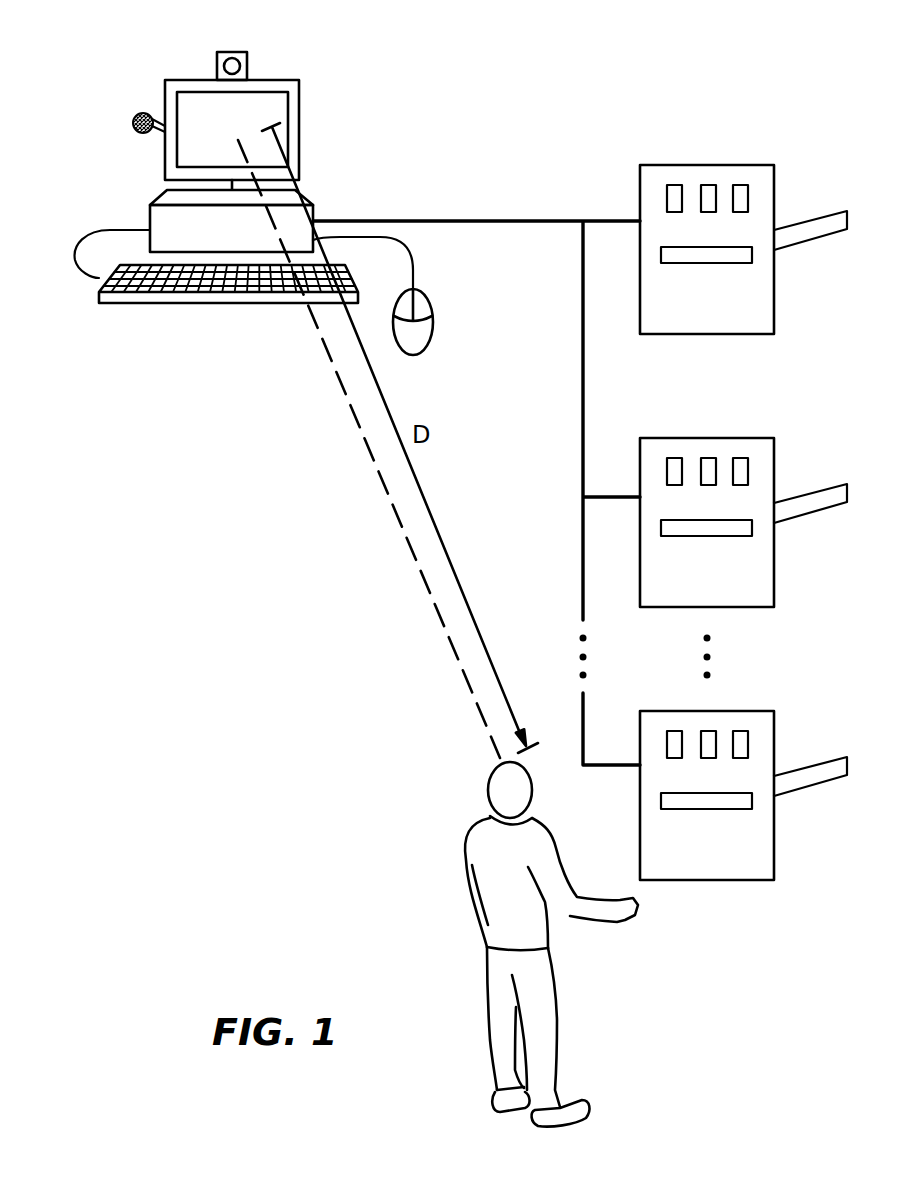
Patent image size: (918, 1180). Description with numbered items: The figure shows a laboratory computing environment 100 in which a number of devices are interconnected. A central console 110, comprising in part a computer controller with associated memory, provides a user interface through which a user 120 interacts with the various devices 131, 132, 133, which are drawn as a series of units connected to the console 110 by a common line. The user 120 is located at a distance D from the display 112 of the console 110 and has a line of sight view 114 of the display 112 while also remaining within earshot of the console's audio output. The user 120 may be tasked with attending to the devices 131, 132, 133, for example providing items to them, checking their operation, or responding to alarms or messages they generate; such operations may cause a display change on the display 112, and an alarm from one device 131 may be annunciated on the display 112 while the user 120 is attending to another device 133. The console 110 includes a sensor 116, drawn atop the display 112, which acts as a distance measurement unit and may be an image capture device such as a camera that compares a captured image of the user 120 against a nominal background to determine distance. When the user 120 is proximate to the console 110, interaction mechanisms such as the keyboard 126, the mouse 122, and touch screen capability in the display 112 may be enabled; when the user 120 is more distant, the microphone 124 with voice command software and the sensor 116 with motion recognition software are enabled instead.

The computing environment 100 is at (228, 518).
The central console 110 is at (312, 143).
The display 112 is at (288, 102).
The line of sight view 114 is at (393, 508).
The sensor 116 is at (234, 52).
The user 120 is at (425, 868).
The mouse 122 is at (418, 352).
The microphone 124 is at (133, 121).
The keyboard 126 is at (190, 306).
The device 131 is at (775, 300).
The device 132 is at (775, 572).
The device 133 is at (775, 847).